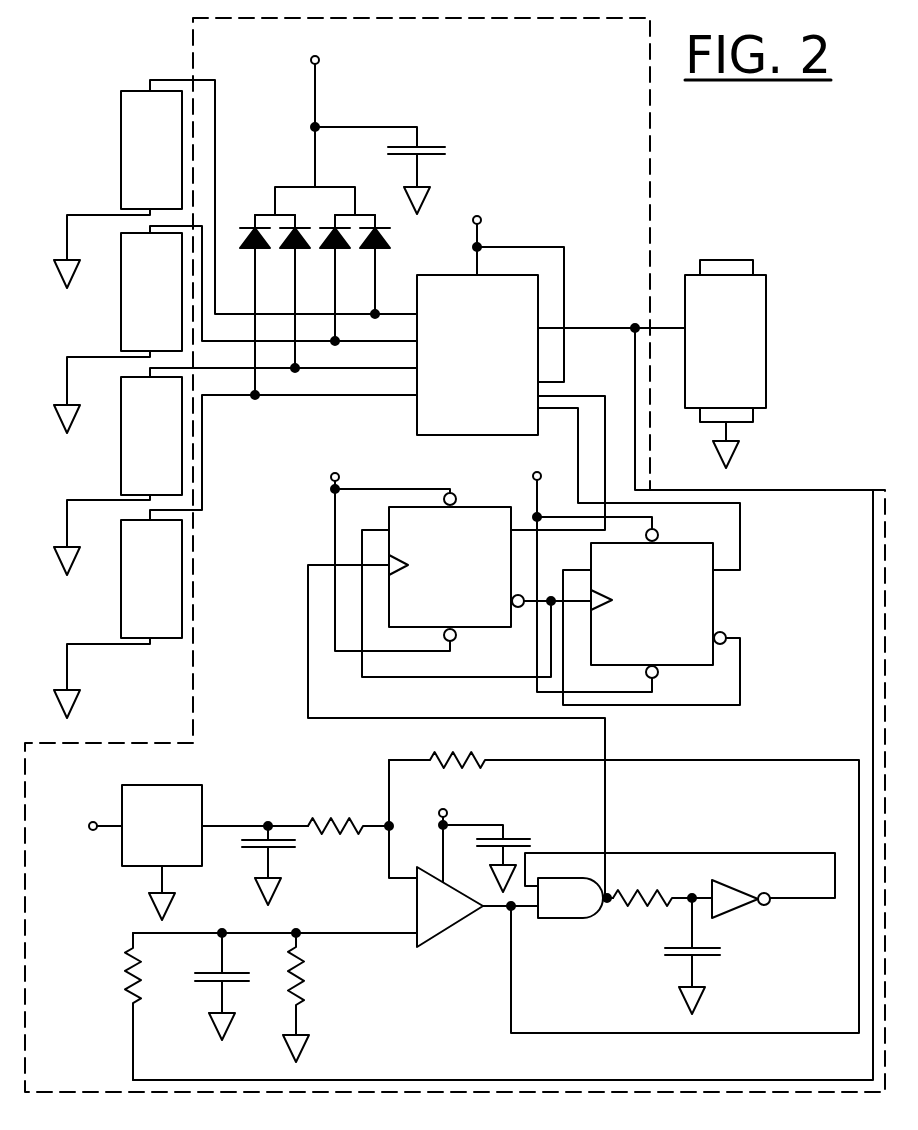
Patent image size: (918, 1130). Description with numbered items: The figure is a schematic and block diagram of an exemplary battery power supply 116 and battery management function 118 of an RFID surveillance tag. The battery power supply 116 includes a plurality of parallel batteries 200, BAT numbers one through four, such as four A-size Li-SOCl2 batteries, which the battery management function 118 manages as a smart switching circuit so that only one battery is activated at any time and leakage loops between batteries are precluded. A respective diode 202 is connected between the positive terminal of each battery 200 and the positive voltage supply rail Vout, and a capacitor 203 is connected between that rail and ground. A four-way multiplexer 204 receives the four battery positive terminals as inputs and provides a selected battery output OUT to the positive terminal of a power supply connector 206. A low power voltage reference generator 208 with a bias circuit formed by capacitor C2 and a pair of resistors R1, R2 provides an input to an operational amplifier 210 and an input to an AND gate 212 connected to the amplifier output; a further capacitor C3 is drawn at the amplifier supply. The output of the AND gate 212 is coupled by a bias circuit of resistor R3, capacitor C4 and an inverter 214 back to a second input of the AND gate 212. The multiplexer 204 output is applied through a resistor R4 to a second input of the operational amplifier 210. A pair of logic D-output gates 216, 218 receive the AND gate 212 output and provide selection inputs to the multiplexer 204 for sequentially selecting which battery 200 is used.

The battery power supply 116 is at (139, 64).
The battery management function 118 is at (450, 78).
The batteries 200 is at (235, 399).
The diode 202 is at (248, 222).
The capacitor 203 is at (380, 170).
The four-way multiplexer 204 is at (503, 634).
The power supply connector 206 is at (725, 364).
The low power voltage reference generator 208 is at (169, 852).
The operational amplifier 210 is at (335, 866).
The AND gate 212 is at (680, 885).
The inverter 214 is at (741, 891).
The logic D-output gate 216 is at (450, 672).
The logic D-output gate 218 is at (604, 576).
The resistor R1 is at (362, 819).
The resistor R2 is at (624, 876).
The resistor R3 is at (662, 884).
The resistor R4 is at (119, 1006).
The capacitor C2 is at (251, 863).
The capacitor C3 is at (486, 858).
The capacitor C4 is at (676, 956).